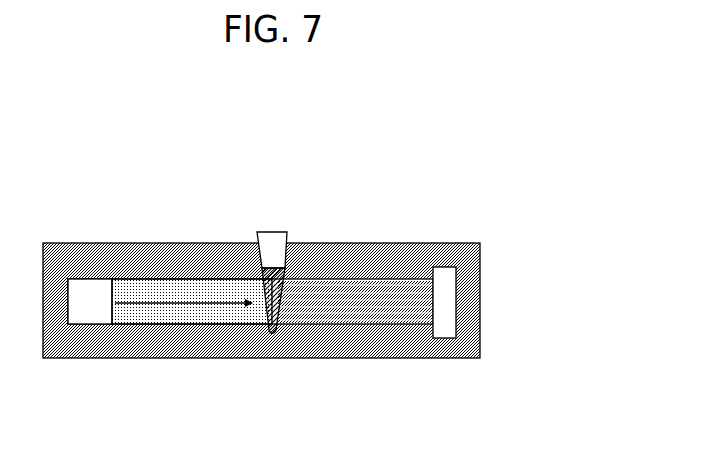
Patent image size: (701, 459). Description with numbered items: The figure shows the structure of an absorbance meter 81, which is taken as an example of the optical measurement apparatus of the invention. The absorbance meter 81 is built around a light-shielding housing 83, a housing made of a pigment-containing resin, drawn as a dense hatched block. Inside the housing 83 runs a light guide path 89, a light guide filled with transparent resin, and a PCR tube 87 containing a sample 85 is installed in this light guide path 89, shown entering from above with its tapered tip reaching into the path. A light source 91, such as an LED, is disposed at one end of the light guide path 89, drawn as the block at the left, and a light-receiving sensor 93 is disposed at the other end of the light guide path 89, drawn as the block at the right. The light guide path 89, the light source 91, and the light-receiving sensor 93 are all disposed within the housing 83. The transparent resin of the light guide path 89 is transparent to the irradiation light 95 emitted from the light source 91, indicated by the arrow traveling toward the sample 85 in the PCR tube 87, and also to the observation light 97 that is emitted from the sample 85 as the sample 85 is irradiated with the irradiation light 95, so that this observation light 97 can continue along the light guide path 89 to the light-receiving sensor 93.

The absorbance meter 81 is at (394, 138).
The light-shielding housing 83 is at (467, 243).
The sample 85 is at (240, 255).
The PCR tube 87 is at (272, 238).
The light guide path 89 is at (153, 288).
The light source 91 is at (92, 312).
The light-receiving sensor 93 is at (443, 303).
The irradiation light 95 is at (165, 302).
The observation light 97 is at (335, 352).